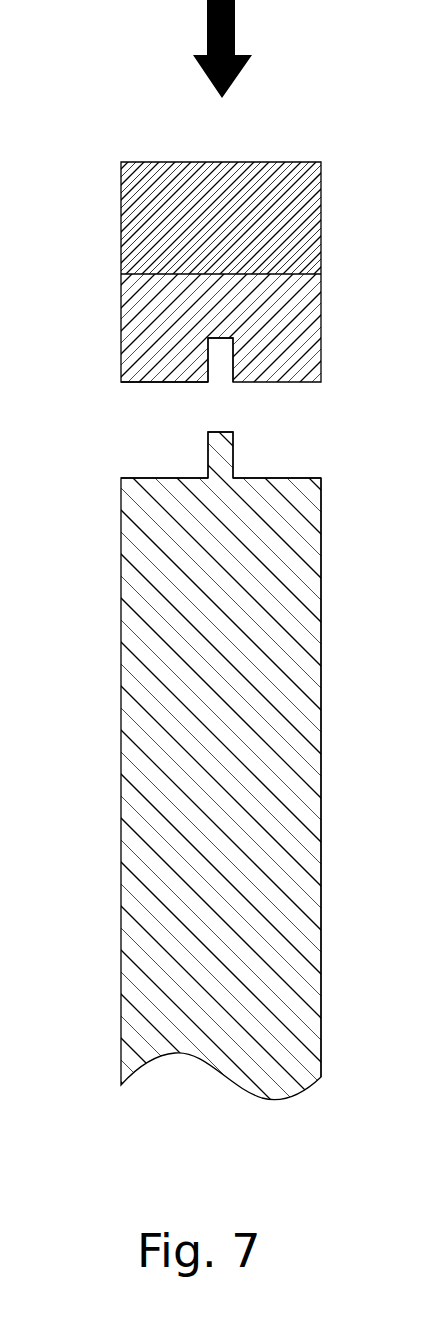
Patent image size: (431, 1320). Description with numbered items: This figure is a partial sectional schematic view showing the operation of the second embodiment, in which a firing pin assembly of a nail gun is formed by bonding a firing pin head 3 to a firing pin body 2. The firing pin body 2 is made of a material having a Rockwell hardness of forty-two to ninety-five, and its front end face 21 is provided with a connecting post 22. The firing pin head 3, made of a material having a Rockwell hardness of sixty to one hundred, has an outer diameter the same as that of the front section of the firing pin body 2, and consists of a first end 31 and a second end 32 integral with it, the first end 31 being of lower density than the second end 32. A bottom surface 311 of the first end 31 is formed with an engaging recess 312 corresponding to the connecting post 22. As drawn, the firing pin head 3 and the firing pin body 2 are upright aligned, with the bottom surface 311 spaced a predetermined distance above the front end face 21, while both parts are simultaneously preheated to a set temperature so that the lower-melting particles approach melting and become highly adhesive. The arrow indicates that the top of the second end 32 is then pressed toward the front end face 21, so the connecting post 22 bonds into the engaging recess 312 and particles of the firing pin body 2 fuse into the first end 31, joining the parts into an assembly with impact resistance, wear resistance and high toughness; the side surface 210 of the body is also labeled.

The firing pin body 2 is at (158, 795).
The front end face 21 is at (289, 476).
The connecting post 22 is at (230, 447).
The side surface of base body 210 is at (376, 777).
The firing pin head 3 is at (397, 197).
The first end 31 is at (302, 307).
The bottom surface 311 is at (150, 385).
The engaging recess 312 is at (217, 353).
The second end 32 is at (298, 222).